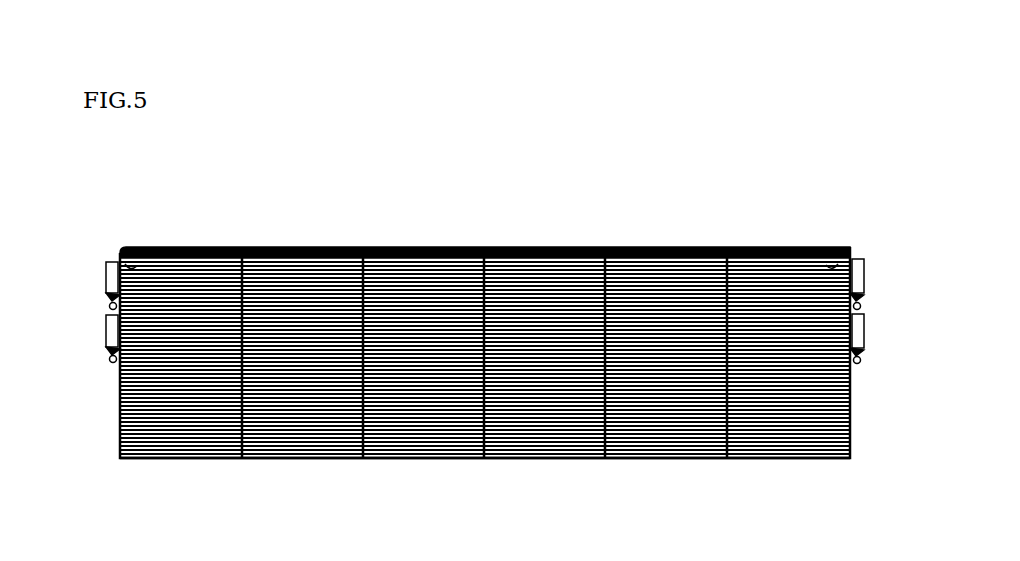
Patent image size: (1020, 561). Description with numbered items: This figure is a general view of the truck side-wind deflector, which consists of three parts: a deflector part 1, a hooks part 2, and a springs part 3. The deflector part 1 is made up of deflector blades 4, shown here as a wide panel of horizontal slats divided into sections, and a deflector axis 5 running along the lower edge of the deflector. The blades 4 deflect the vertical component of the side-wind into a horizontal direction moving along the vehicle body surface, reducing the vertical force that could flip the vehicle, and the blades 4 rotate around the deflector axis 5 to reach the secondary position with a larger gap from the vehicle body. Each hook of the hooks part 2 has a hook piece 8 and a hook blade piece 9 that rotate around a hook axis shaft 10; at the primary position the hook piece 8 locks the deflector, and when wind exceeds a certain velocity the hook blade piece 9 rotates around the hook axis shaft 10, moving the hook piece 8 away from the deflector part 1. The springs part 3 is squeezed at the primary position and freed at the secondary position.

The deflector part 1 is at (485, 357).
The hooks part 2 is at (875, 273).
The springs part 3 is at (118, 282).
The deflector blades 4 is at (320, 315).
The deflector axis 5 is at (193, 459).
The hook piece 8 is at (859, 363).
The hook blade piece 9 is at (858, 328).
The hook axis shaft 10 is at (858, 352).